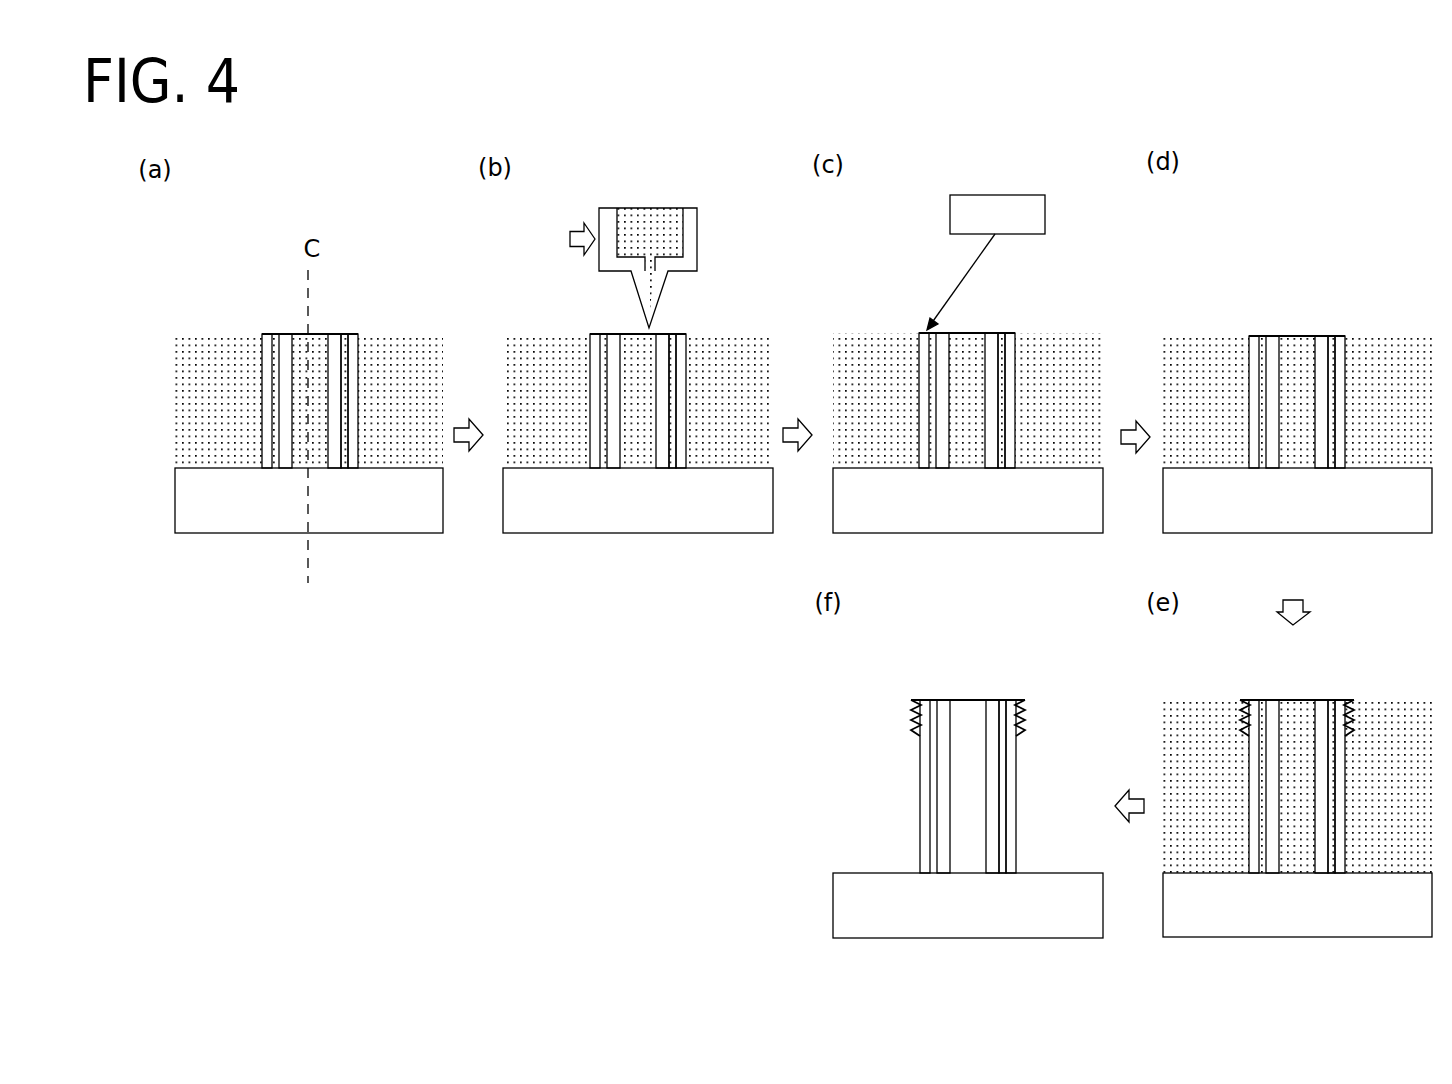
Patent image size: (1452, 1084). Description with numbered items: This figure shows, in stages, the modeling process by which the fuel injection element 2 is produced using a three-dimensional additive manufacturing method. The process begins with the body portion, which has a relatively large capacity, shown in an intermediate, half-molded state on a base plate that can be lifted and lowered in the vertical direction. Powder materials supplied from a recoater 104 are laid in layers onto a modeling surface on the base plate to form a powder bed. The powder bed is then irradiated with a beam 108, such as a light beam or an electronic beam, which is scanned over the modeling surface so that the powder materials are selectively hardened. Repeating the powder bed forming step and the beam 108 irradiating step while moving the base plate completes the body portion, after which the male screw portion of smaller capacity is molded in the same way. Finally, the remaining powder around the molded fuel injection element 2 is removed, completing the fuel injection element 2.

The fuel injection element 2 is at (1014, 786).
The recoater 104 is at (683, 210).
The beam 108 is at (1030, 195).